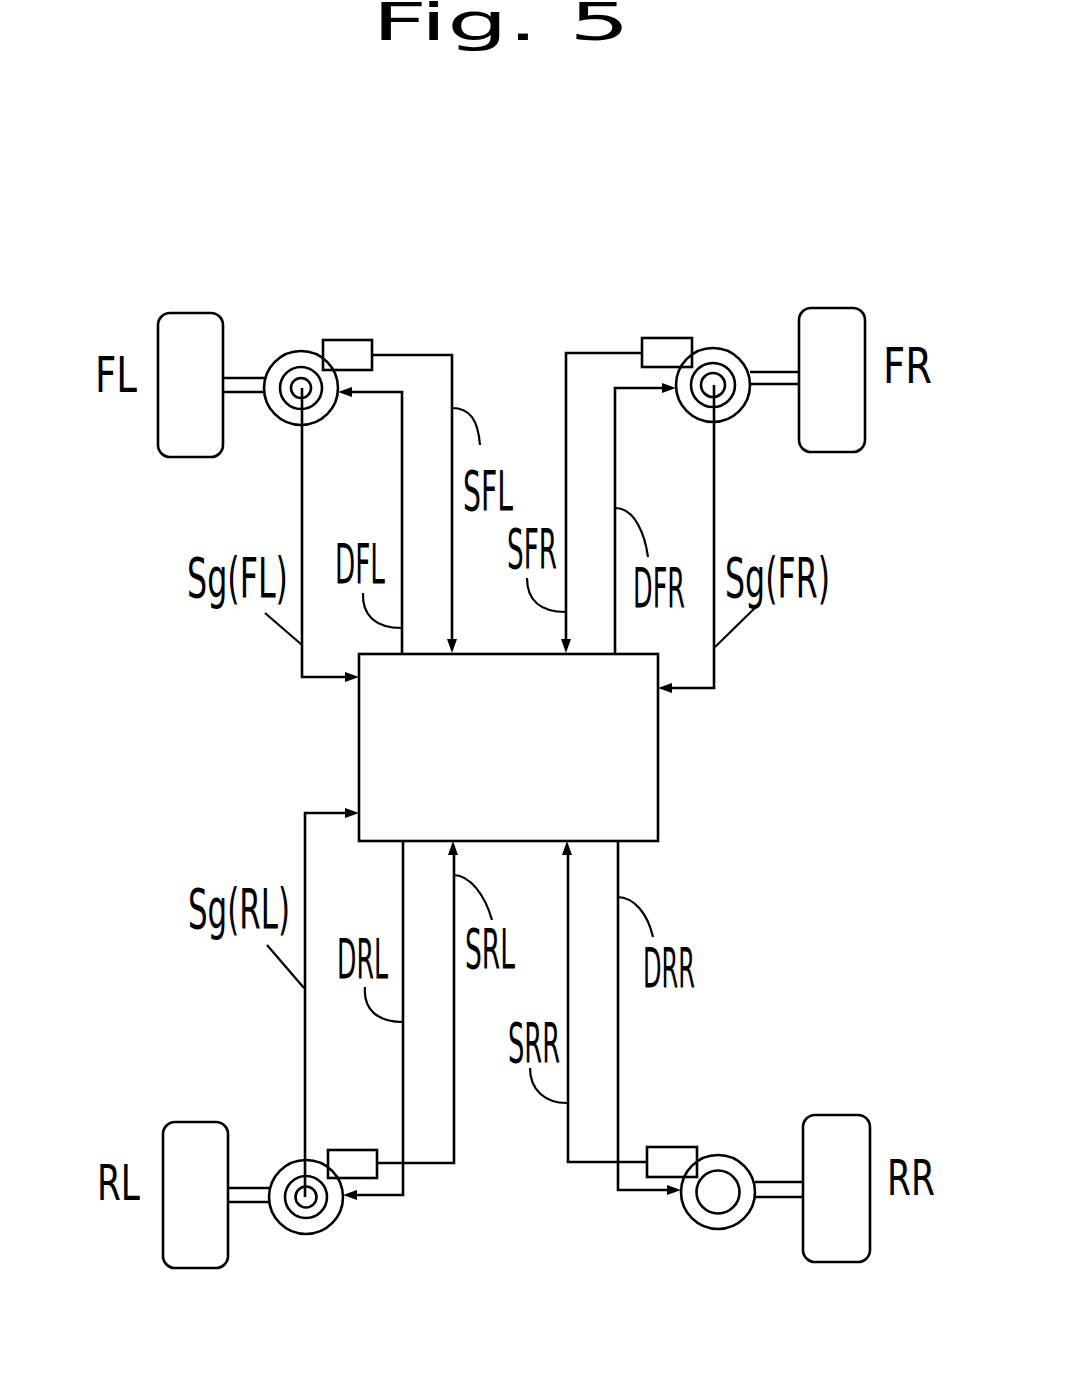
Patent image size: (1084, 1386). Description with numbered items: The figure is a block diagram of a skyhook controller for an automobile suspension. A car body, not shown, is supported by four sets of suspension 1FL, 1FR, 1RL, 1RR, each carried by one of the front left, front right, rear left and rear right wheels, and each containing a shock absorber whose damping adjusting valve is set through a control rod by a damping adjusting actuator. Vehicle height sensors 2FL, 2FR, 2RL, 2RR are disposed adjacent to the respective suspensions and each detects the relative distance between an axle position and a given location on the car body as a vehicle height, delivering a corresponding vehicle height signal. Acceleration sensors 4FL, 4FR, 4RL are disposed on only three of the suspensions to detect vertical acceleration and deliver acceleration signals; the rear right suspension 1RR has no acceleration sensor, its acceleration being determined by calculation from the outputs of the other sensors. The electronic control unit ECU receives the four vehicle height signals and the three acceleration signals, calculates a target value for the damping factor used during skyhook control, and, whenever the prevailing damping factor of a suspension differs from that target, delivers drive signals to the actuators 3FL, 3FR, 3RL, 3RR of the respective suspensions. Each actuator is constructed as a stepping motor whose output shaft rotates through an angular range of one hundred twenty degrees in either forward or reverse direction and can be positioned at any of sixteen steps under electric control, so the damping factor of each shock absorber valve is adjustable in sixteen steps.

The suspension 1FL is at (287, 352).
The vehicle height sensor 2FL is at (359, 340).
The actuator 3FL is at (320, 410).
The acceleration sensor 4FL is at (297, 393).
The suspension 1FR is at (733, 350).
The vehicle height sensor 2FR is at (662, 338).
The actuator 3FR is at (697, 397).
The acceleration sensor 4FR is at (727, 390).
The suspension 1RL is at (283, 1163).
The vehicle height sensor 2RL is at (353, 1150).
The actuator 3RL is at (315, 1217).
The acceleration sensor 4RL is at (313, 1203).
The suspension 1RR is at (743, 1162).
The vehicle height sensor 2RR is at (672, 1142).
The actuator 3RR is at (727, 1197).
The electronic control unit ECU is at (658, 812).